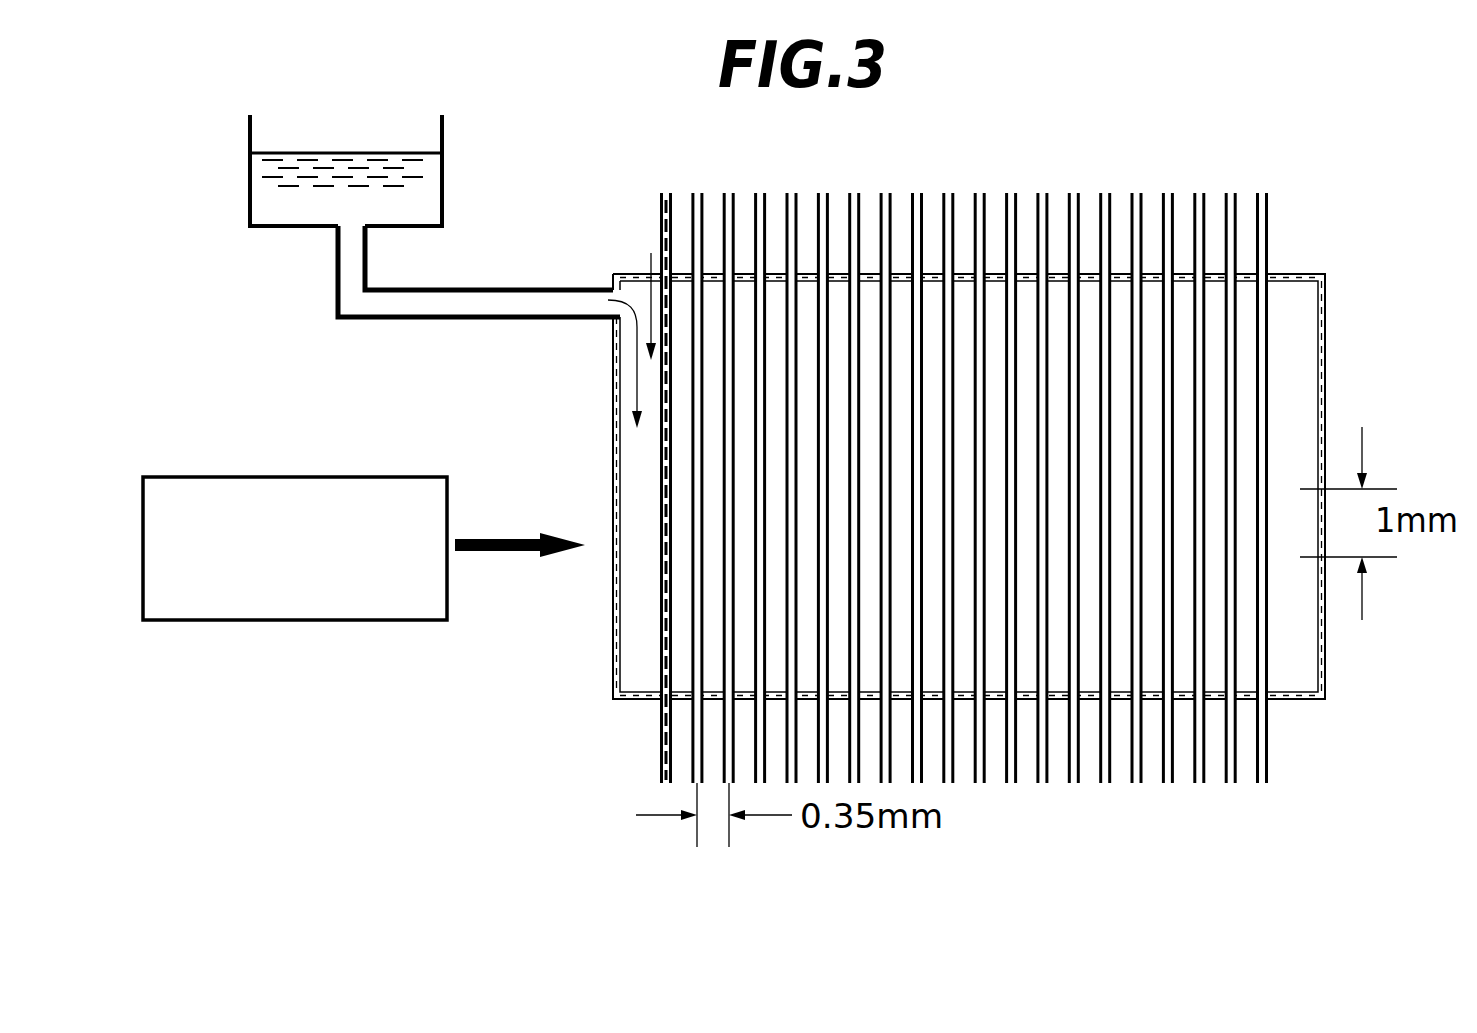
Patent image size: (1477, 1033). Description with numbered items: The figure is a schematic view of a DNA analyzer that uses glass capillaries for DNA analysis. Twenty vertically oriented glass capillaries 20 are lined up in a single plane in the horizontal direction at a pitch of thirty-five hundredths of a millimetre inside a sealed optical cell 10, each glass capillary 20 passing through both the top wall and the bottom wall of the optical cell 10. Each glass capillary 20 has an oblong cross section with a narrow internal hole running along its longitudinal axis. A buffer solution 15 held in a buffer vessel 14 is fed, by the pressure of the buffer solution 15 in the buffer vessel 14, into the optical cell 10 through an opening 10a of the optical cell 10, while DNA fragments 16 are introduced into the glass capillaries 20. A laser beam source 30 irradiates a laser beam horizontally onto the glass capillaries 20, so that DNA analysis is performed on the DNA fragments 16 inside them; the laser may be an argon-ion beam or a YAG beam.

The optical cell 10 is at (1325, 285).
The opening 10a is at (615, 338).
The buffer vessel 14 is at (248, 190).
The buffer solution 15 is at (293, 215).
The DNA fragments 16 is at (660, 228).
The glass capillaries 20 is at (1288, 399).
The laser beam source 30 is at (346, 476).